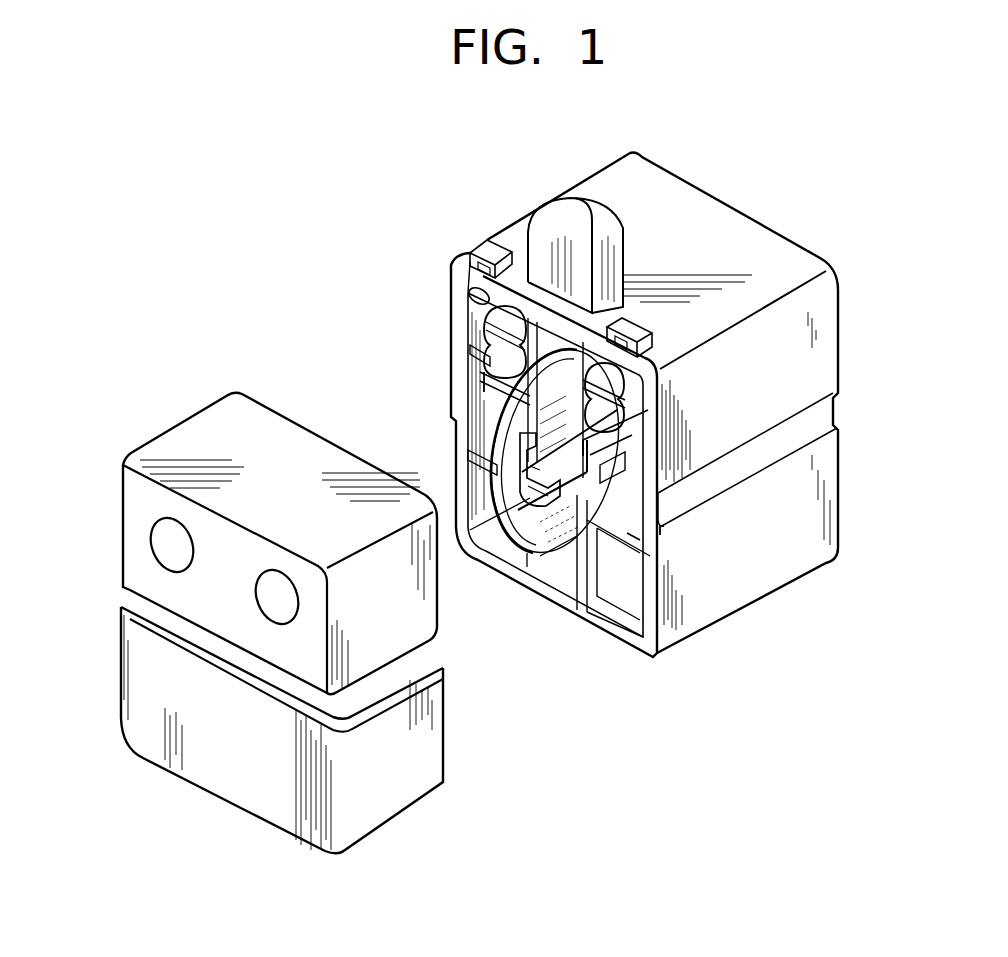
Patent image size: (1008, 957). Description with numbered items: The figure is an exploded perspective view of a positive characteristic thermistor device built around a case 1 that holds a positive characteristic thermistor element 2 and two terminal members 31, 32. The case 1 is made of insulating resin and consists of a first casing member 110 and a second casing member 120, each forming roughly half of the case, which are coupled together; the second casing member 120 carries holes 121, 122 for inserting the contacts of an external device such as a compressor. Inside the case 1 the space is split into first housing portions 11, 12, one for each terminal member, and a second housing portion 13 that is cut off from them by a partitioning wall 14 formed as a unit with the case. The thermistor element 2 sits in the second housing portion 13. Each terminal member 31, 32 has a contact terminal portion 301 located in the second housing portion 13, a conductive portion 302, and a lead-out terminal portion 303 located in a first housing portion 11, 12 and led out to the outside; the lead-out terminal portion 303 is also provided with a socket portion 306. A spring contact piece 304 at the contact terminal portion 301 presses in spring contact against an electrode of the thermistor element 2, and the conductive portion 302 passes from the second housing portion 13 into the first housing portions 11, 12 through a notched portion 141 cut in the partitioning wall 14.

The case 1 is at (725, 162).
The positive characteristic thermistor element 2 is at (493, 466).
The first housing portion 11 is at (480, 313).
The first housing portion 12 is at (632, 393).
The second housing portion 13 is at (500, 424).
The partitioning wall 14 is at (482, 358).
The notched portion 141 is at (480, 372).
The terminal member 31 is at (488, 291).
The terminal member 32 is at (654, 411).
The first casing member 110 is at (820, 550).
The second casing member 120 is at (420, 768).
The hole 121 is at (170, 530).
The hole 122 is at (272, 597).
The contact terminal portion 301 is at (519, 525).
The conductive portion 302 is at (618, 456).
The lead-out terminal portion 303 is at (481, 298).
The spring contact piece 304 is at (534, 540).
The socket portion 306 is at (490, 335).